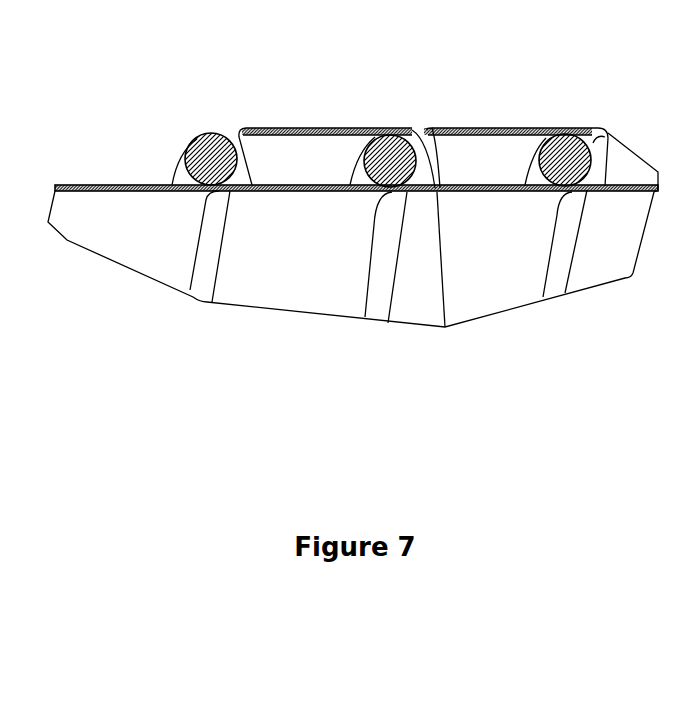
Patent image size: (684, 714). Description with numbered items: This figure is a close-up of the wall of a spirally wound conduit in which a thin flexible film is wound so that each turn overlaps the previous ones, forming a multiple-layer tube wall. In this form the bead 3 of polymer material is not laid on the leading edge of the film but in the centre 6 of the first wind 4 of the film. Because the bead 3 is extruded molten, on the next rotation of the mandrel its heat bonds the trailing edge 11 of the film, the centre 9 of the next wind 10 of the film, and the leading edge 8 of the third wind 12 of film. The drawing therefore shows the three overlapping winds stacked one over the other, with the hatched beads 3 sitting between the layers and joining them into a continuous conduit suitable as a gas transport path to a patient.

The bead 3 is at (198, 145).
The first wind of the film 4 is at (275, 117).
The centre of the first wind 6 is at (230, 192).
The leading edge of the third wind 8 is at (445, 327).
The centre of the next wind 9 is at (430, 130).
The next wind of the film 10 is at (523, 110).
The trailing edge 11 is at (403, 130).
The third wind of film 12 is at (535, 200).